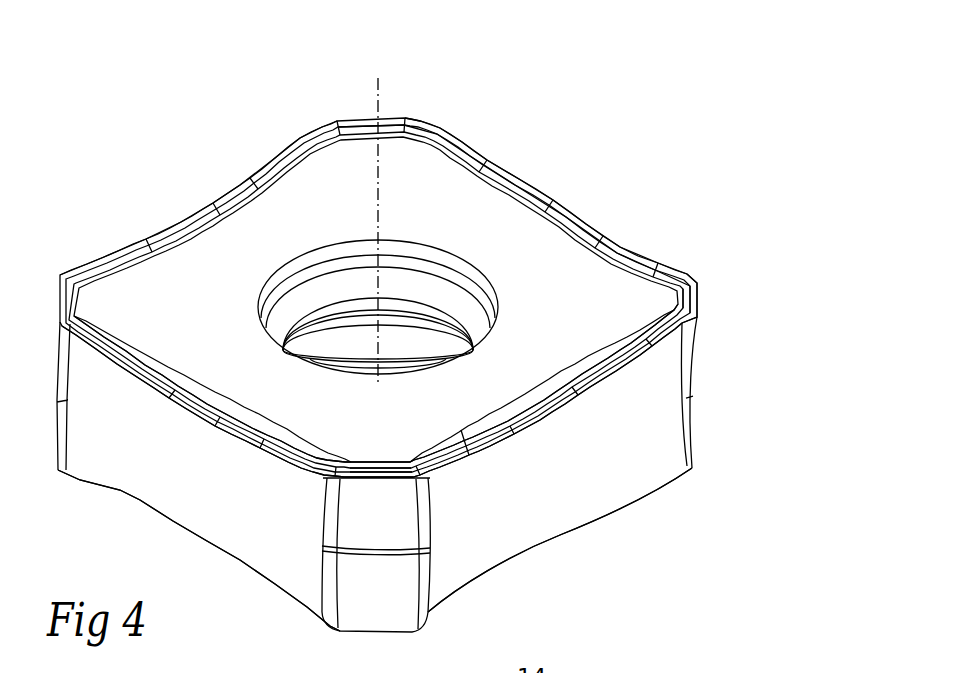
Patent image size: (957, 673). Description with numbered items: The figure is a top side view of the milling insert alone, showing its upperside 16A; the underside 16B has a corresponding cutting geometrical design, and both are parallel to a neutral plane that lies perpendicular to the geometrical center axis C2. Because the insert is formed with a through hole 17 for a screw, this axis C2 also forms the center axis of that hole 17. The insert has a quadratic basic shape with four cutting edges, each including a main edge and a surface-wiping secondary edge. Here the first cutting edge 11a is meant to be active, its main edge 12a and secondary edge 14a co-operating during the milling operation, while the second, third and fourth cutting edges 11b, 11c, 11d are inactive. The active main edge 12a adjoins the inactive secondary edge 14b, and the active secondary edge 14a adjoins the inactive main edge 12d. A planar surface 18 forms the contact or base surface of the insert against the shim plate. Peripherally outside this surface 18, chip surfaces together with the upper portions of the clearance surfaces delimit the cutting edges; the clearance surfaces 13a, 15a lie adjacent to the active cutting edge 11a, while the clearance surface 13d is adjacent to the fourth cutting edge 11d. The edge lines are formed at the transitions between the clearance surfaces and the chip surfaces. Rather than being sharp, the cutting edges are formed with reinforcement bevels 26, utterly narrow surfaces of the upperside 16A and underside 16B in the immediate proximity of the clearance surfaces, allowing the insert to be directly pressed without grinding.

The first cutting edge 11a is at (574, 409).
The second cutting edge 11b is at (538, 199).
The third cutting edge 11c is at (188, 220).
The fourth cutting edge 11d is at (134, 381).
The main edge 12a is at (486, 456).
The main edge 12d is at (203, 426).
The clearance surface 13a is at (621, 482).
The clearance surface 13d is at (277, 522).
The secondary edge 14a is at (383, 470).
The secondary edge 14b is at (698, 292).
The clearance surface 15a is at (398, 602).
The upperside 16A is at (254, 133).
The underside 16B is at (598, 535).
The through hole 17 is at (333, 284).
The planar surface 18 is at (441, 223).
The reinforcement bevel 26 is at (630, 243).
The geometrical center axis C2 is at (378, 88).